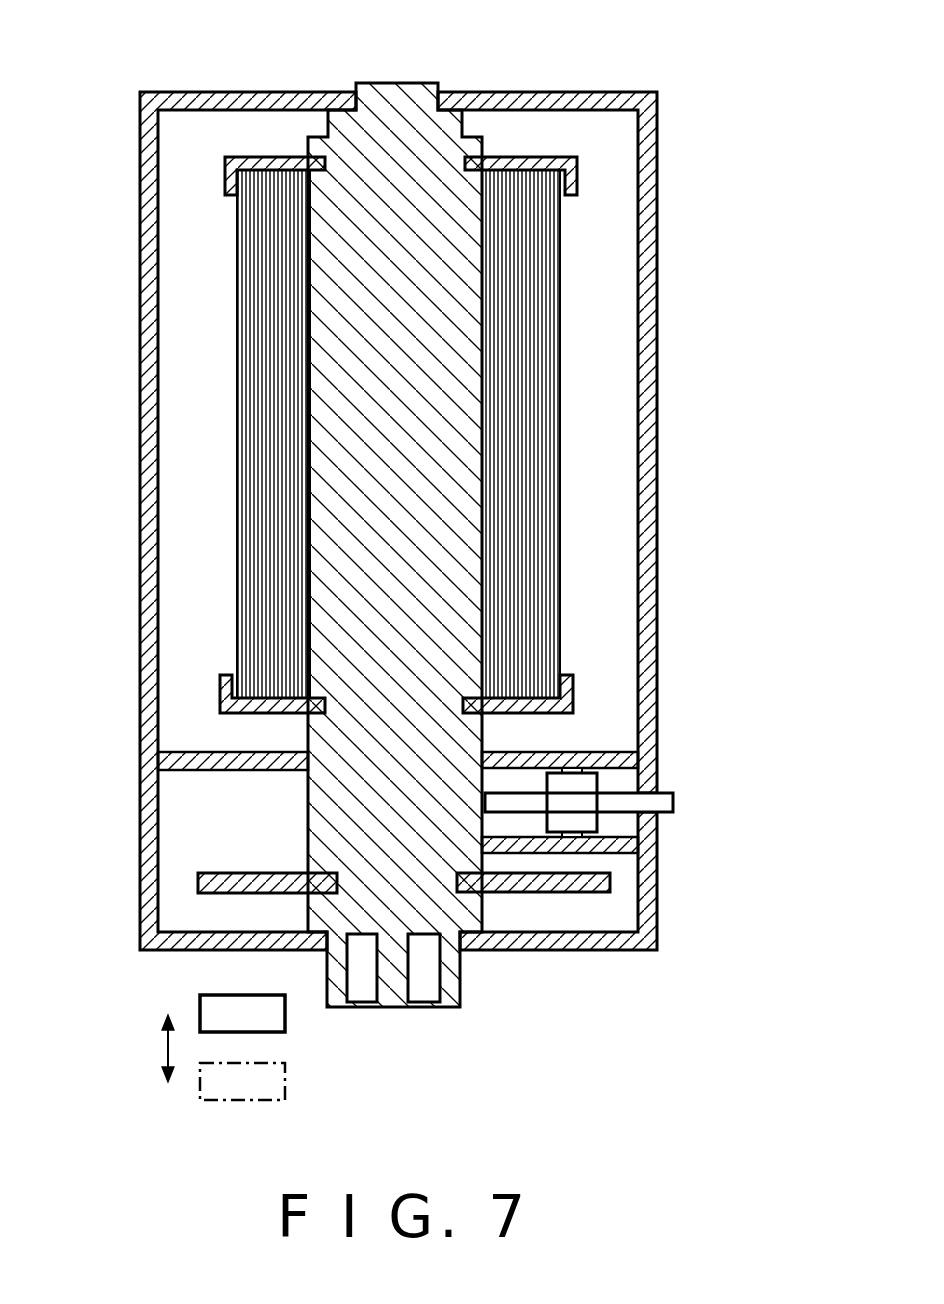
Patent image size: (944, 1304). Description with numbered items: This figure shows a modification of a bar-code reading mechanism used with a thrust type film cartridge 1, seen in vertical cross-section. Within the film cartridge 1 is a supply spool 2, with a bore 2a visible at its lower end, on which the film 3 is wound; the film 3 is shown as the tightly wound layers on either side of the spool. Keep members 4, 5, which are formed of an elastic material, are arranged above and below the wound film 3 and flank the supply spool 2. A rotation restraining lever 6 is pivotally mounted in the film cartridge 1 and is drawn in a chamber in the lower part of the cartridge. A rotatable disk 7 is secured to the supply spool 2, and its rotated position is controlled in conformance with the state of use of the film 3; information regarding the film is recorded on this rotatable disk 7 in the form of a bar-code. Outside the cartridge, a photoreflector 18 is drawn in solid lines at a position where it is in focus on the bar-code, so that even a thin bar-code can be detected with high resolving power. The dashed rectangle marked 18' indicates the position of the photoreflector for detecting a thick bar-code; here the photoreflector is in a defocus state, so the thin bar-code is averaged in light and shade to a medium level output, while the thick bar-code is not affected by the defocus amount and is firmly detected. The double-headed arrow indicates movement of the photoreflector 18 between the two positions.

The thrust type film cartridge 1 is at (669, 208).
The supply spool 2 is at (400, 95).
The shaft bore 2a is at (425, 996).
The film 3 is at (562, 400).
The keep member 4 is at (527, 160).
The keep member 5 is at (573, 690).
The rotation restraining lever 6 is at (583, 792).
The rotatable disk 7 is at (560, 893).
The photoreflector 18 is at (185, 1036).
The position of the photoreflector for detecting a thick bar-code 18' is at (187, 1110).